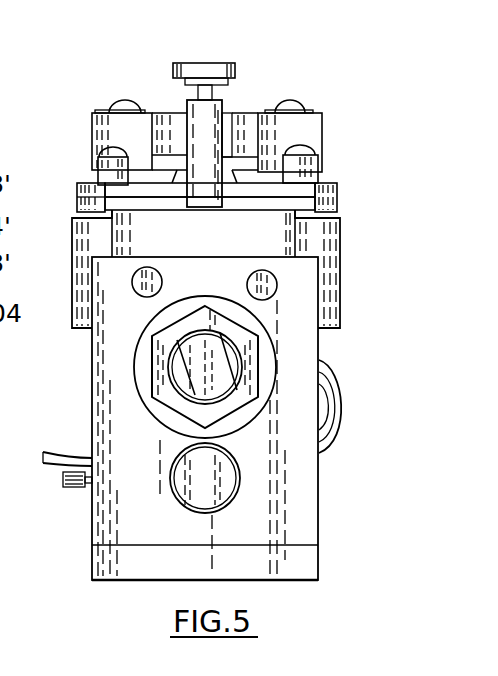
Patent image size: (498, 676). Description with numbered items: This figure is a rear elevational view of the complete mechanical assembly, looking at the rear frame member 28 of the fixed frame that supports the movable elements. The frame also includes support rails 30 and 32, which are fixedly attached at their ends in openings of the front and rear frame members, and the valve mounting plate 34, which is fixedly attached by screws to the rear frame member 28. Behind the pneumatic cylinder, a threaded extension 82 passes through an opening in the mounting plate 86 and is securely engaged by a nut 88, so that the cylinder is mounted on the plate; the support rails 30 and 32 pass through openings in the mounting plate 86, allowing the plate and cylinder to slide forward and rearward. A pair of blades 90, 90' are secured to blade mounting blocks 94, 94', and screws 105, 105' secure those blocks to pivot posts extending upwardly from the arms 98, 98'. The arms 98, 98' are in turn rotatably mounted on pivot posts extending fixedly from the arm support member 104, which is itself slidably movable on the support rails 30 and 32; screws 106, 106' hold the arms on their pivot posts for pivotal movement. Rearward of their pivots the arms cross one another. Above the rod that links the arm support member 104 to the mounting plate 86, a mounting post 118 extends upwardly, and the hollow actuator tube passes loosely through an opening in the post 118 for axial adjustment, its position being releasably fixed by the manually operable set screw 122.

The rear frame member 28 is at (110, 402).
The support rail 30 is at (262, 297).
The support rail 32 is at (147, 292).
The valve mounting plate 34 is at (312, 563).
The threaded extension 82 is at (220, 372).
The mounting plate 86 is at (162, 197).
The nut 88 is at (207, 412).
The blade 90 is at (280, 113).
The blade 90' is at (160, 107).
The blade mounting block 94 is at (326, 134).
The blade mounting block 94' is at (90, 124).
The arm 98 is at (249, 217).
The arm 98' is at (66, 175).
The arm support member 104 is at (333, 266).
The screw 105 is at (338, 83).
The screw 105' is at (109, 72).
The screw 106 is at (352, 156).
The screw 106' is at (71, 154).
The mounting post 118 is at (245, 122).
The set screw 122 is at (204, 62).